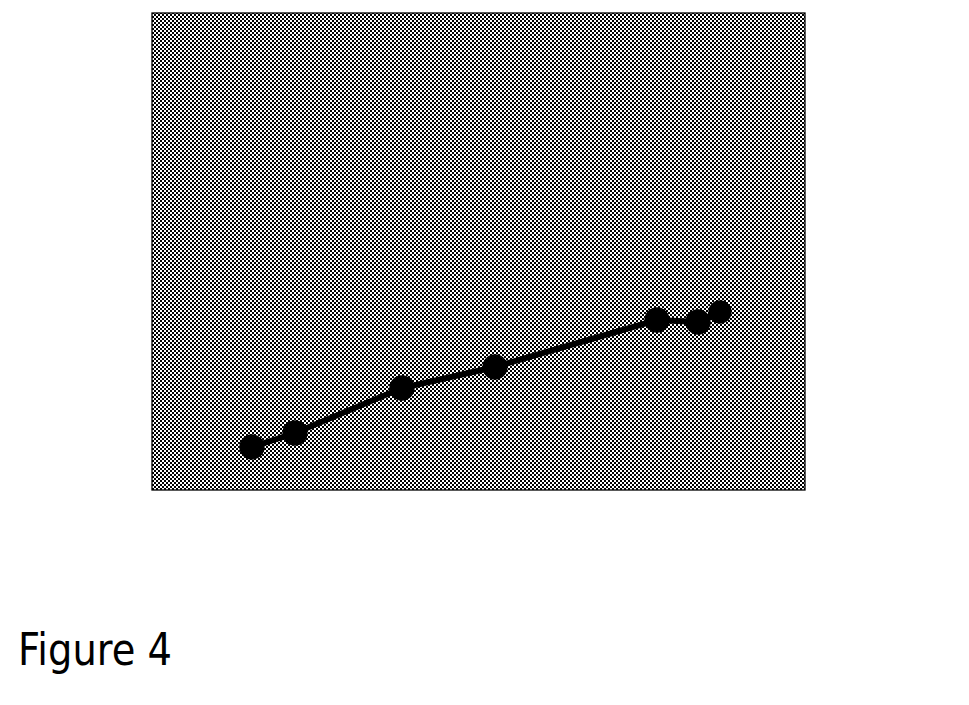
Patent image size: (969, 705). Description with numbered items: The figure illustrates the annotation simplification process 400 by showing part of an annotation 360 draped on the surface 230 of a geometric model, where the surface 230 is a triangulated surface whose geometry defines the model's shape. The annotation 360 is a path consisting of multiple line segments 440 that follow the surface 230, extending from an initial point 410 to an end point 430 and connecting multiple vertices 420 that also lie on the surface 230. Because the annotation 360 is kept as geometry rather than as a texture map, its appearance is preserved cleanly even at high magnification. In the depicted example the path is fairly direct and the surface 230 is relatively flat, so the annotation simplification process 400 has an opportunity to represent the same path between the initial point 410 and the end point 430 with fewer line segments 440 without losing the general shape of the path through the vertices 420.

The annotation simplification process 400 is at (478, 271).
The surface of a model 230 is at (695, 116).
The annotation 360 is at (604, 203).
The line segments 440 is at (397, 340).
The vertices 420 is at (322, 452).
The initial point 410 is at (281, 465).
The end point 430 is at (746, 330).